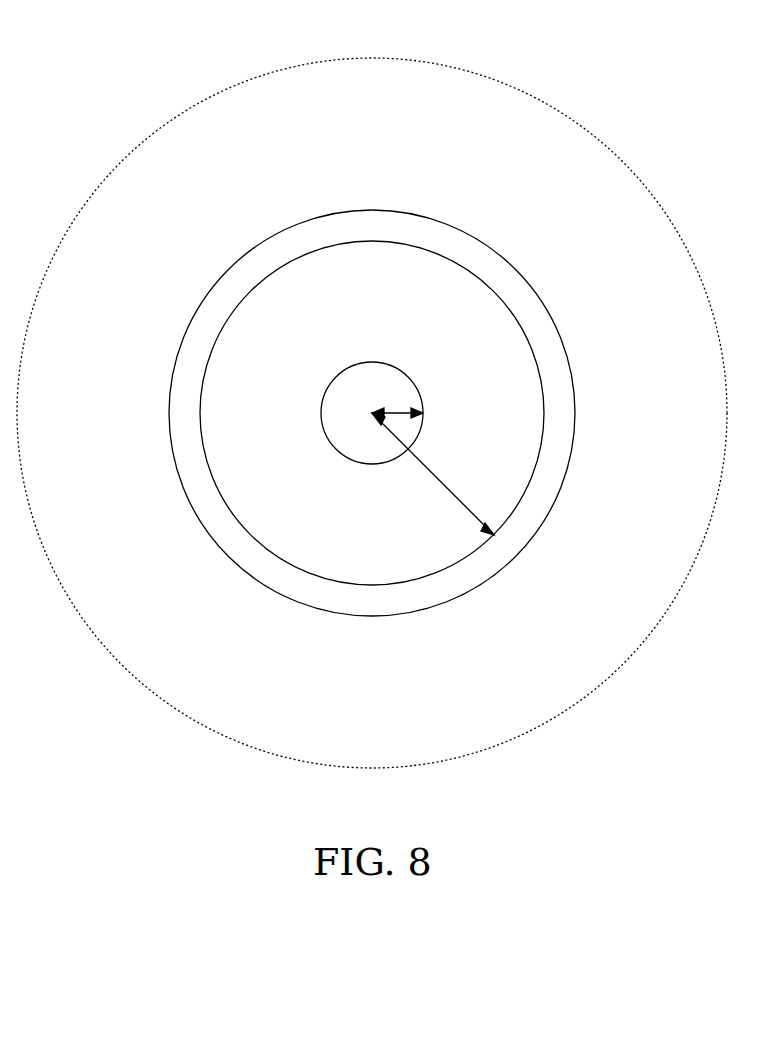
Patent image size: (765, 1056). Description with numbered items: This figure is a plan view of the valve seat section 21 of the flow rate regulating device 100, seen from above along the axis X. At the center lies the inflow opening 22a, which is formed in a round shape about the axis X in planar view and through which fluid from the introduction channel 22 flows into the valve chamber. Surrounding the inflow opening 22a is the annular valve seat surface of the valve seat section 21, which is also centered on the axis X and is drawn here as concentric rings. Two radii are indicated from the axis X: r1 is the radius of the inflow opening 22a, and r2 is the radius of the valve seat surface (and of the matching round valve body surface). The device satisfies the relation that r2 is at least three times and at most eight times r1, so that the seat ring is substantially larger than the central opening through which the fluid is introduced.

The flow rate regulating device 100 is at (606, 108).
The valve seat section 21 is at (388, 568).
The introduction channel 22 is at (409, 430).
The inflow opening 22a is at (357, 440).
The axis X is at (365, 411).
The radius of the inflow opening r1 is at (397, 401).
The radius of the valve body surface and valve seat surface r2 is at (433, 474).